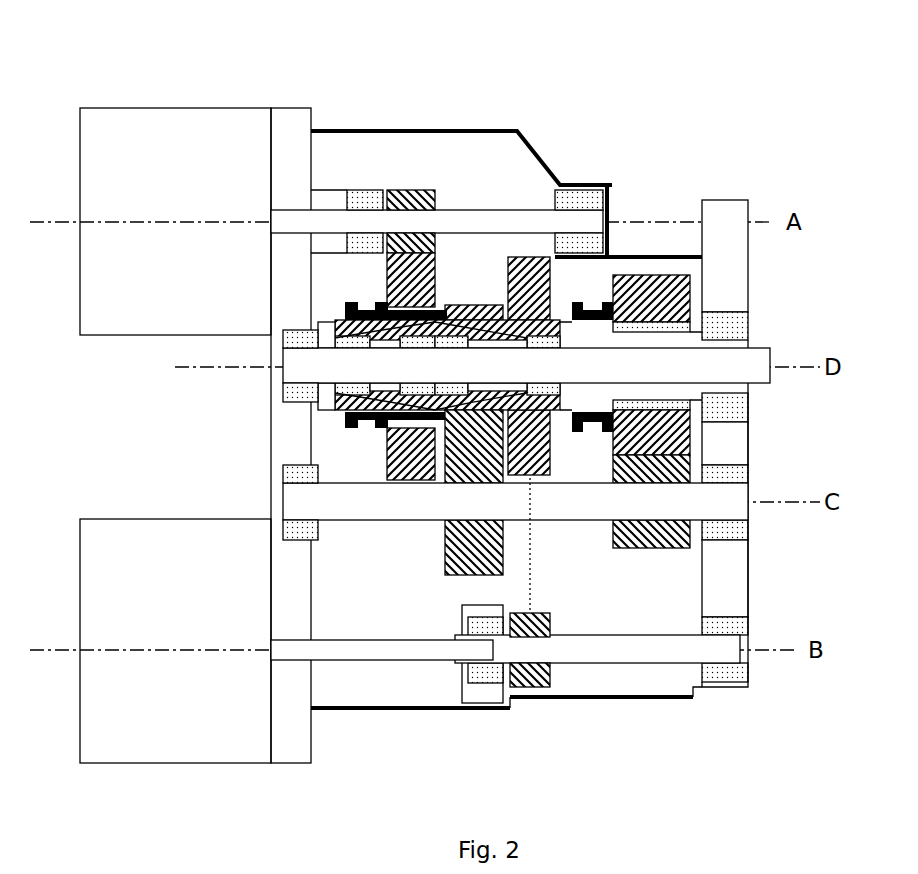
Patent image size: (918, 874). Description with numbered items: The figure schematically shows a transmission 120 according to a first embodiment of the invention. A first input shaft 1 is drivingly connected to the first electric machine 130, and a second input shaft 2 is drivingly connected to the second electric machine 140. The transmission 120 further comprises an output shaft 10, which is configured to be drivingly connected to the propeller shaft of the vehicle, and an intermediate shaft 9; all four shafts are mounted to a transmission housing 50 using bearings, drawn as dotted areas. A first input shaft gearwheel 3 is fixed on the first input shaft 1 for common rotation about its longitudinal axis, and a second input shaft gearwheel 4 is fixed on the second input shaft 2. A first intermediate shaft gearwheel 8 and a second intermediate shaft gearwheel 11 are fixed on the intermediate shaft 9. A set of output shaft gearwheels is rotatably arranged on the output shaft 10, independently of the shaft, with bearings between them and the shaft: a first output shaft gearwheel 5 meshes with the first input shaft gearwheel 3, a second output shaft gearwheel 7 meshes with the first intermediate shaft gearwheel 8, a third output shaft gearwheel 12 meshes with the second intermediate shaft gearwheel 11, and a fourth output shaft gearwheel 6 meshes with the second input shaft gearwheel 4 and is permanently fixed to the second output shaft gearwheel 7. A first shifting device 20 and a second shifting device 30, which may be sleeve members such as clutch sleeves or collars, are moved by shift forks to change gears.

The first input shaft 1 is at (540, 212).
The second input shaft 2 is at (590, 657).
The first input shaft gearwheel 3 is at (415, 190).
The second input shaft gearwheel 4 is at (525, 680).
The first output shaft gearwheel 5 is at (405, 483).
The fourth output shaft gearwheel 6 is at (510, 262).
The second output shaft gearwheel 7 is at (470, 306).
The first intermediate shaft gearwheel 8 is at (453, 575).
The intermediate shaft 9 is at (353, 520).
The output shaft 10 is at (605, 359).
The second intermediate shaft gearwheel 11 is at (632, 548).
The third output shaft gearwheel 12 is at (660, 290).
The first shifting device 20 is at (345, 420).
The second shifting device 30 is at (600, 305).
The transmission housing 50 is at (455, 131).
The transmission 120 is at (659, 118).
The first electric machine 130 is at (207, 194).
The second electric machine 140 is at (207, 609).